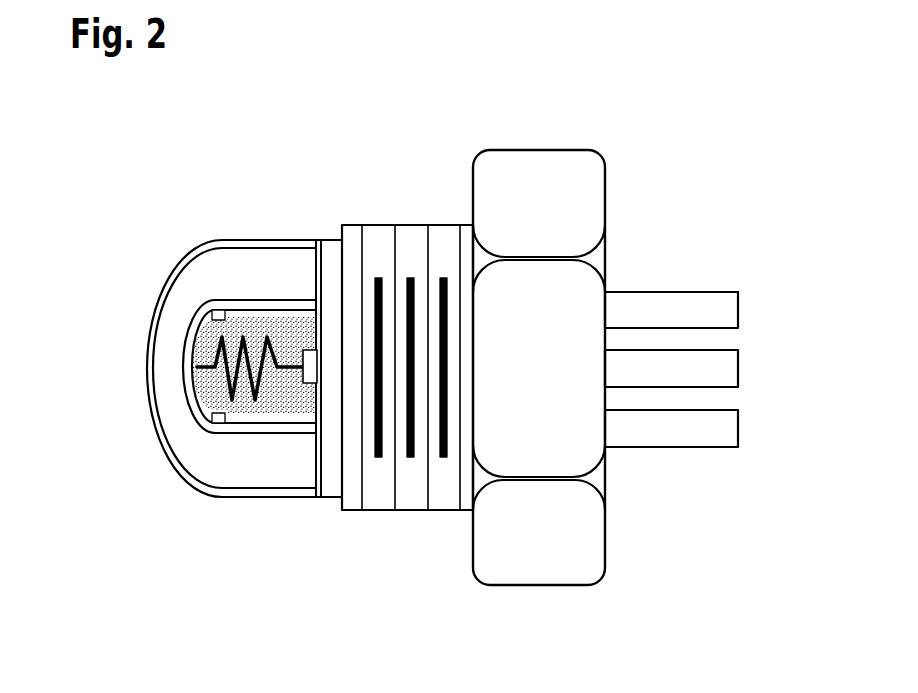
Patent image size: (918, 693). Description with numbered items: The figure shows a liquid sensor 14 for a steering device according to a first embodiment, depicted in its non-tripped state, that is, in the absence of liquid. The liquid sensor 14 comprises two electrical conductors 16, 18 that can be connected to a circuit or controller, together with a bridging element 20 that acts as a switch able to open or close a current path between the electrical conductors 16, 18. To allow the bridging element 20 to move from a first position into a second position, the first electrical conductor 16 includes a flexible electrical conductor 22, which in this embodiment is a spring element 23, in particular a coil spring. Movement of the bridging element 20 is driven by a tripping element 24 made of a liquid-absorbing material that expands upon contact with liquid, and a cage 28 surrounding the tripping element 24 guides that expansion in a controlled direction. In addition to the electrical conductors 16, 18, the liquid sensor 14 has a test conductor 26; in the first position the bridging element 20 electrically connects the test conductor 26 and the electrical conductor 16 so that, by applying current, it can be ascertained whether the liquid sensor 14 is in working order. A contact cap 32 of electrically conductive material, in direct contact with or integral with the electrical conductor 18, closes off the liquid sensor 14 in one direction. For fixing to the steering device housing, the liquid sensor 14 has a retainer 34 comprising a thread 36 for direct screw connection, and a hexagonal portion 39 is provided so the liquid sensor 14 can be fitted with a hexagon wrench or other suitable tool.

The liquid sensor 14 is at (640, 106).
The electrical conductor 16 is at (720, 367).
The electrical conductor 18 is at (720, 430).
The bridging element 20 is at (188, 348).
The flexible electrical conductor 22 is at (243, 330).
The spring element 23 is at (257, 368).
The tripping element 24 is at (247, 410).
The test conductor 26 is at (720, 307).
The cage 28 is at (292, 428).
The contact cap 32 is at (150, 378).
The retainer 34 is at (407, 237).
The thread 36 is at (411, 367).
The hexagonal portion 39 is at (530, 177).